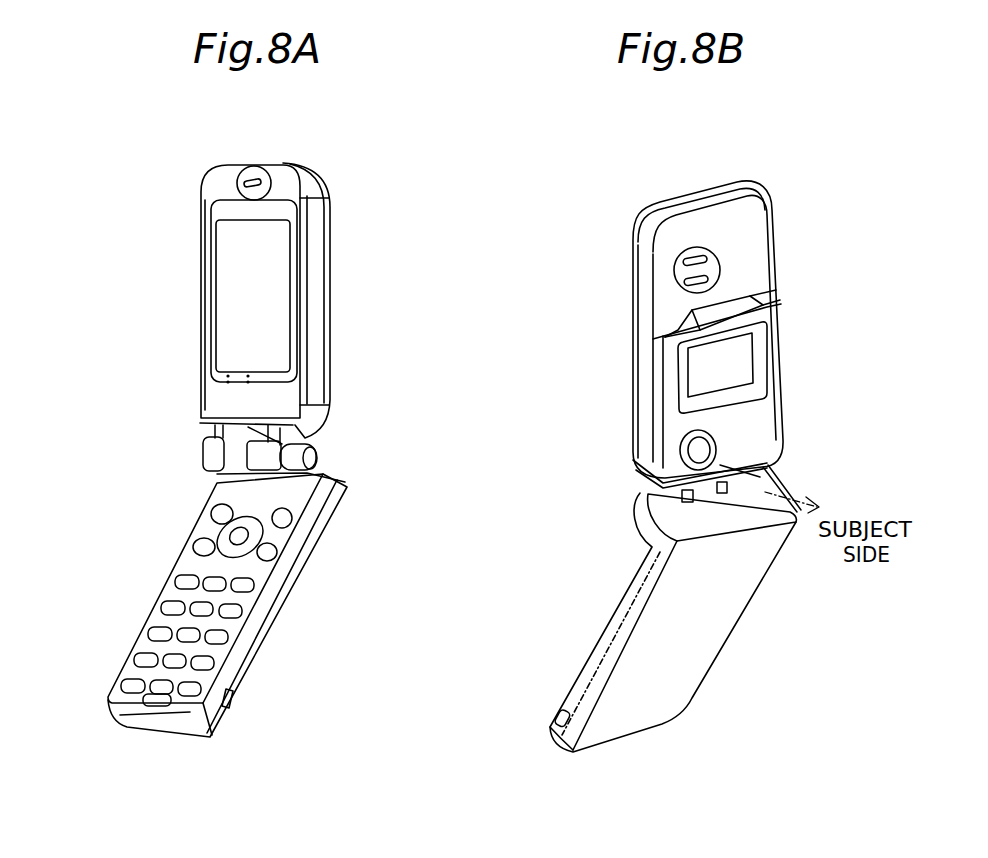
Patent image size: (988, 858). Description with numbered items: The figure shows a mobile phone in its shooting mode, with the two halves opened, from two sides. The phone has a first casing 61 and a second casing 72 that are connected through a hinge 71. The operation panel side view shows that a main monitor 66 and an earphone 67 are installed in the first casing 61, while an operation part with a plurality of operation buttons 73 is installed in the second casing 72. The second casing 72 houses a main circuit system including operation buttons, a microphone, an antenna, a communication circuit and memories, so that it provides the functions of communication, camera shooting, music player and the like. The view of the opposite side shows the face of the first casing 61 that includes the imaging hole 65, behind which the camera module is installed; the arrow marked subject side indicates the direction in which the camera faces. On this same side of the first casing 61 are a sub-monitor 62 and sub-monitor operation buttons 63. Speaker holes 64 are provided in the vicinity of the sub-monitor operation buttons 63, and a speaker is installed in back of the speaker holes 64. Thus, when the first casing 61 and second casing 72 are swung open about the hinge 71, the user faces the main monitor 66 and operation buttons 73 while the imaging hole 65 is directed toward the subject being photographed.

In FIG. 8A, the first casing 61 is at (328, 320).
In FIG. 8B, the first casing 61 is at (632, 357).
In FIG. 8B, the sub-monitor 62 is at (727, 370).
In FIG. 8B, the sub-monitor operation buttons 63 is at (748, 299).
In FIG. 8B, the speaker holes 64 is at (675, 271).
In FIG. 8B, the imaging hole 65 is at (688, 455).
In FIG. 8A, the main monitor 66 is at (262, 285).
In FIG. 8A, the earphone 67 is at (240, 182).
In FIG. 8A, the hinge 71 is at (313, 462).
In FIG. 8B, the hinge 71 is at (640, 512).
In FIG. 8A, the second casing 72 is at (300, 583).
In FIG. 8B, the second casing 72 is at (593, 623).
In FIG. 8A, the operation buttons 73 is at (200, 547).